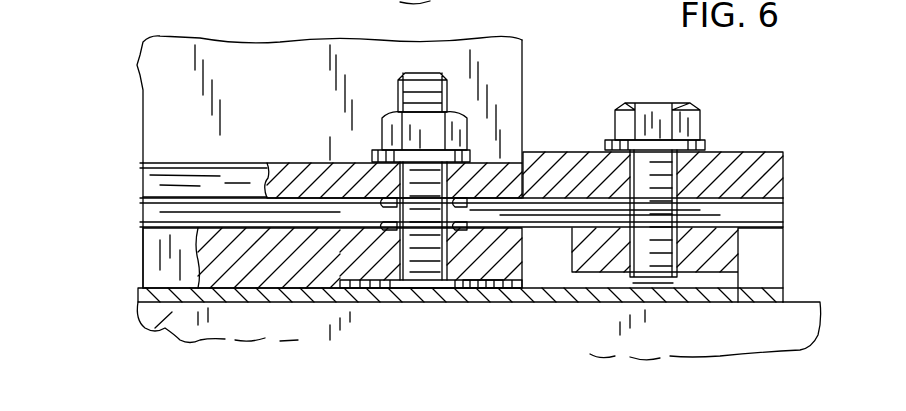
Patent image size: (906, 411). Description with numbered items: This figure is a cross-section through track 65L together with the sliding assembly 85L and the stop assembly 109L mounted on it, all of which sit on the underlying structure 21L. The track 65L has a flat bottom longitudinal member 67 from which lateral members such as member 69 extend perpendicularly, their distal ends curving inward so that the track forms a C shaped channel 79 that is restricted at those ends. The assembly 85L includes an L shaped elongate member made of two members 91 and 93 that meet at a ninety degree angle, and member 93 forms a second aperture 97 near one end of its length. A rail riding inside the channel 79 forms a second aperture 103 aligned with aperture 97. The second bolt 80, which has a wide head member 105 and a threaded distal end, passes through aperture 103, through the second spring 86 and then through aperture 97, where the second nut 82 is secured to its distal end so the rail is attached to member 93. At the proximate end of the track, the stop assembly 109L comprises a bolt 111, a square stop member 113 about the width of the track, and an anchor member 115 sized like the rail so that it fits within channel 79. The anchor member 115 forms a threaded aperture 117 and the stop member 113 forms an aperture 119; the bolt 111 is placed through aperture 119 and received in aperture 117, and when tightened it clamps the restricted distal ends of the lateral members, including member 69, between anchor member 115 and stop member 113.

The left frame rail 21L is at (147, 328).
The track 65L is at (760, 272).
The flat bottom longitudinal member 67 is at (732, 300).
The lateral member 69 is at (765, 241).
The C shaped channel 79 is at (572, 278).
The second bolt 80 is at (413, 78).
The second nut 82 is at (448, 114).
The assembly 85L is at (608, 72).
The second spring 86 is at (497, 163).
The member 91 is at (172, 85).
The member 93 is at (162, 180).
The second aperture 97 is at (372, 146).
The second aperture 103 is at (417, 288).
The wide head member 105 is at (483, 290).
The stop assembly 109L is at (652, 192).
The bolt 111 is at (670, 118).
The square stop member 113 is at (717, 173).
The anchor member 115 is at (783, 208).
The aperture 117 is at (632, 277).
The aperture 119 is at (633, 173).